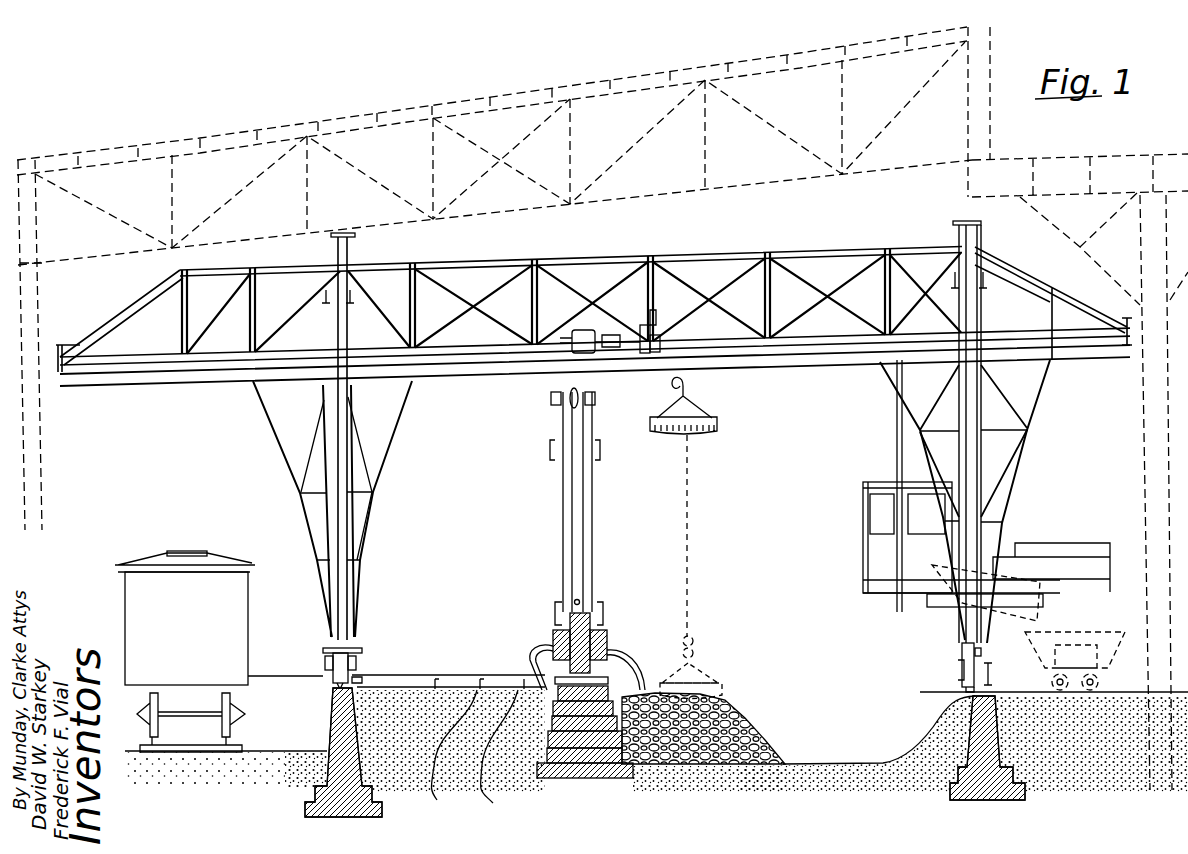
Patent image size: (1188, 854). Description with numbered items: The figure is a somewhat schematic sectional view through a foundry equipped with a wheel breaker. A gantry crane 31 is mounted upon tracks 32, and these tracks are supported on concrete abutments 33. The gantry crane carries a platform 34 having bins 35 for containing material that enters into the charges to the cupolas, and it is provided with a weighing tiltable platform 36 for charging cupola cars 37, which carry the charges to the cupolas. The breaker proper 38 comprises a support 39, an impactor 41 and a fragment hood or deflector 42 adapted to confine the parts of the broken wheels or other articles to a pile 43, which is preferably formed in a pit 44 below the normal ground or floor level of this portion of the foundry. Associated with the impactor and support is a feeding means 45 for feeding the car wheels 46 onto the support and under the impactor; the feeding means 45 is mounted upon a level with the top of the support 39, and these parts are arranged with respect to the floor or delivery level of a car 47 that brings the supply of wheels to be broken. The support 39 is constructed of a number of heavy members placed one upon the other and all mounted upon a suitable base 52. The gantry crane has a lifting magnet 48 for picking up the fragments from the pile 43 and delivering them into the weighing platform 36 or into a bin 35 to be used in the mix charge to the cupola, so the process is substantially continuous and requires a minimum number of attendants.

The gantry crane 31 is at (473, 372).
The tracks 32 is at (333, 688).
The concrete abutments 33 is at (308, 805).
The platform 34 is at (883, 593).
The bins 35 is at (1090, 560).
The weighing tiltable platform 36 is at (940, 600).
The cupola cars 37 is at (1078, 657).
The breaker 38 is at (608, 633).
The support 39 is at (594, 745).
The impactor 41 is at (587, 613).
The fragment hood or deflector 42 is at (627, 667).
The pile 43 is at (717, 710).
The pit 44 is at (838, 753).
The feeding means 45 is at (451, 754).
The car wheels 46 is at (502, 757).
The car 47 is at (234, 632).
The lifting magnet 48 is at (718, 421).
The base 52 is at (613, 778).